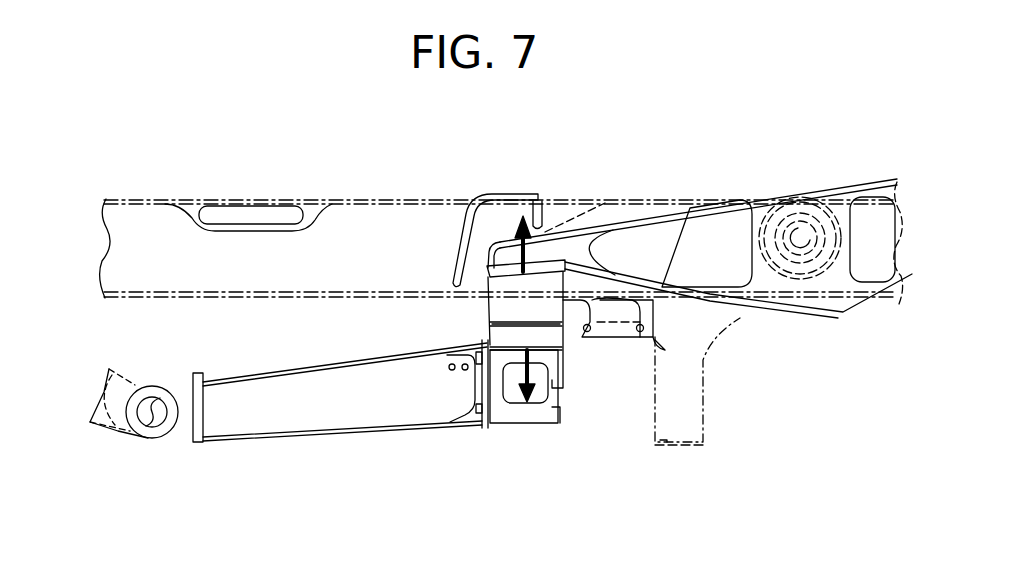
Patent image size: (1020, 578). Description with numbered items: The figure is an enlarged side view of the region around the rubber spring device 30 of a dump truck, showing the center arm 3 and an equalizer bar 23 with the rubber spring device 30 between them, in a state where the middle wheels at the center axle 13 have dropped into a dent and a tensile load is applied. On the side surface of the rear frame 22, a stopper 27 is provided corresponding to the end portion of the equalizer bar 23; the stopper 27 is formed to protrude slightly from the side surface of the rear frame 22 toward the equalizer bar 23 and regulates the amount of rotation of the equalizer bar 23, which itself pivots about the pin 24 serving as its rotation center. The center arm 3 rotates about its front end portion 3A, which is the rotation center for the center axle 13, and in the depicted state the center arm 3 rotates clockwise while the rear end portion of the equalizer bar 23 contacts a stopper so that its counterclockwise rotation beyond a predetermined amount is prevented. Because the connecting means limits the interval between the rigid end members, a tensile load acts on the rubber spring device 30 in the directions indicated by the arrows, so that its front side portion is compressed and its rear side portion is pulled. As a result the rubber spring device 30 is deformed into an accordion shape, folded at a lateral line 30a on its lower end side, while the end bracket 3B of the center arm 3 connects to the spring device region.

The rear frame 22 is at (352, 236).
The stopper 27 is at (493, 196).
The equalizer bar 23 is at (676, 243).
The pin 24 is at (800, 240).
The rubber spring device 30 is at (483, 316).
The line 30a is at (535, 330).
The center arm 3 is at (322, 413).
The front end portion 3A is at (162, 418).
The end bracket of lower arm 3B is at (465, 413).
The center axle 13 is at (518, 412).